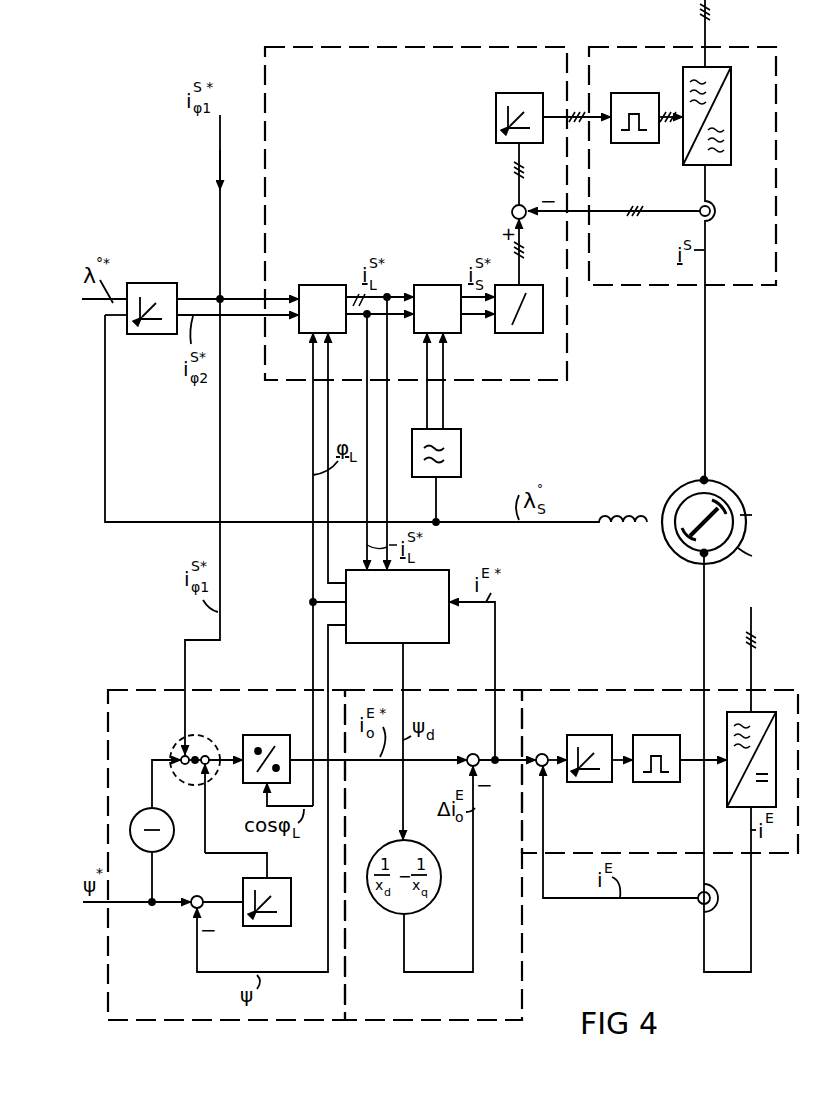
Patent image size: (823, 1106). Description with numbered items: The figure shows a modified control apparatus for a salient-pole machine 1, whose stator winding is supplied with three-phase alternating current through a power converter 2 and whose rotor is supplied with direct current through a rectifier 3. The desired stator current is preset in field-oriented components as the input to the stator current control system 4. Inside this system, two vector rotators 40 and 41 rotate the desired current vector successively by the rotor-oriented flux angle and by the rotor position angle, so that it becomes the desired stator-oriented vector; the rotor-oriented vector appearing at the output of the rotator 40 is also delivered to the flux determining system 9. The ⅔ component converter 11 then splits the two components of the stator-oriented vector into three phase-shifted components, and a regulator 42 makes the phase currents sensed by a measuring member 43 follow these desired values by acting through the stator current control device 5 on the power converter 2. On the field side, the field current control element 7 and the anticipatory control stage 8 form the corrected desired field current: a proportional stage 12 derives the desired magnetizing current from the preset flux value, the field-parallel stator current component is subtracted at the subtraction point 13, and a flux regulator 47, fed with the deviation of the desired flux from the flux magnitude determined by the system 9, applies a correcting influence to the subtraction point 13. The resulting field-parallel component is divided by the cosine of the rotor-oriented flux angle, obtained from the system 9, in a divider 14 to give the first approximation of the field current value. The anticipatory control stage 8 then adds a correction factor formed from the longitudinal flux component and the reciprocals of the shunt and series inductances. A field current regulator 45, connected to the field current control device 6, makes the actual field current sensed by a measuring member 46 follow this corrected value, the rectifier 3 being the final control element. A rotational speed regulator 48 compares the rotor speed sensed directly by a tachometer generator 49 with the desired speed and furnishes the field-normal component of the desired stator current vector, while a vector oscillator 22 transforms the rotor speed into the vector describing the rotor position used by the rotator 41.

The salient-pole machine 1 is at (718, 485).
The power converter 2 is at (731, 100).
The rectifier 3 is at (737, 808).
The stator current control system 4 is at (360, 47).
The stator current control device 5 is at (633, 93).
The field current control device 6 is at (655, 735).
The field current control element 7 is at (222, 1022).
The anticipatory control stage 8 is at (430, 1022).
The flux determining system 9 is at (425, 643).
The ⅔ component converter 11 is at (519, 333).
The proportional stage 12 is at (136, 814).
The subtraction point 13 is at (178, 742).
The divider 14 is at (267, 735).
The vector oscillator 22 is at (461, 452).
The vector rotator 40 is at (322, 285).
The vector rotator 41 is at (437, 285).
The regulator 42 is at (518, 93).
The measuring member 43 is at (717, 211).
The field current regulator 45 is at (583, 739).
The measuring member 46 is at (695, 905).
The flux regulator 47 is at (262, 926).
The rotational speed regulator 48 is at (152, 283).
The tachometer generator 49 is at (619, 512).